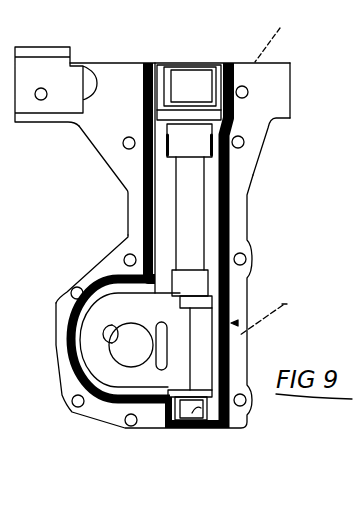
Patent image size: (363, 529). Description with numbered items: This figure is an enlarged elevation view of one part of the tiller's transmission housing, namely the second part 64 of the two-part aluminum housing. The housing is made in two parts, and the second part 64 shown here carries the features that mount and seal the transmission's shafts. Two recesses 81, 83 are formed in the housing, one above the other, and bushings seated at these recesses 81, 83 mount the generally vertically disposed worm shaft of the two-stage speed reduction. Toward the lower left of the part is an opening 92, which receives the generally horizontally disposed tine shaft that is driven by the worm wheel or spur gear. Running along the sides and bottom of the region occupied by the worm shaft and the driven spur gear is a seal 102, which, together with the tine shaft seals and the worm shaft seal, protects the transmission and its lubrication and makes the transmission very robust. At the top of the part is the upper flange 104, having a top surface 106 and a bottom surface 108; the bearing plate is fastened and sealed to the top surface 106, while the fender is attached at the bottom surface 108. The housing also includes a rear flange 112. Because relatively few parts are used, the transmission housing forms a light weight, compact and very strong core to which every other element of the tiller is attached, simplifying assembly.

The second part 64 is at (266, 228).
The recess 81 is at (181, 143).
The recess 83 is at (203, 428).
The opening 92 is at (109, 334).
The seal 102 is at (107, 405).
The upper flange 104 is at (289, 86).
The top surface 106 is at (274, 63).
The bottom surface 108 is at (281, 122).
The rear flange 112 is at (89, 278).